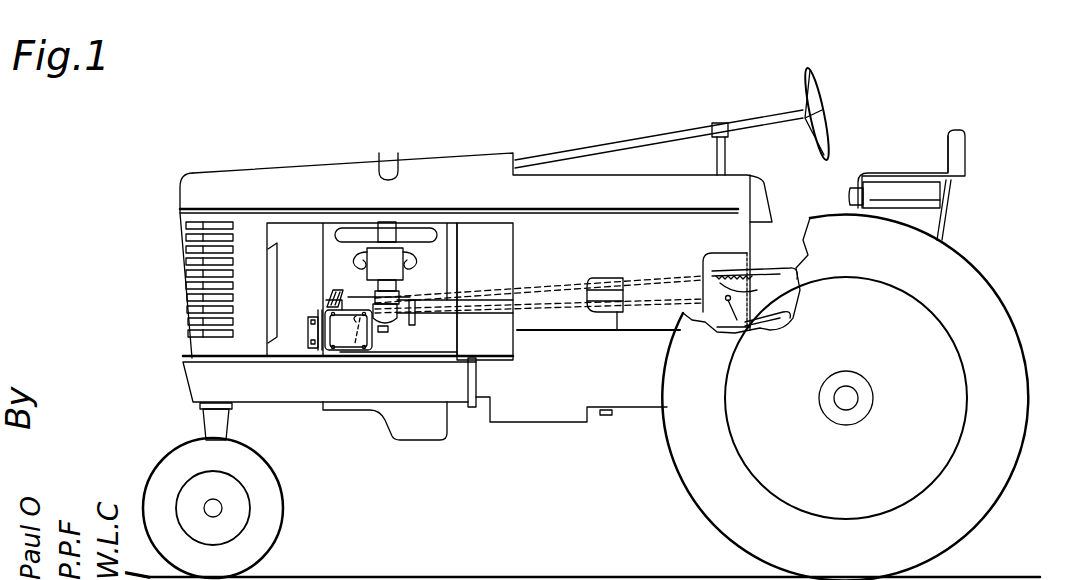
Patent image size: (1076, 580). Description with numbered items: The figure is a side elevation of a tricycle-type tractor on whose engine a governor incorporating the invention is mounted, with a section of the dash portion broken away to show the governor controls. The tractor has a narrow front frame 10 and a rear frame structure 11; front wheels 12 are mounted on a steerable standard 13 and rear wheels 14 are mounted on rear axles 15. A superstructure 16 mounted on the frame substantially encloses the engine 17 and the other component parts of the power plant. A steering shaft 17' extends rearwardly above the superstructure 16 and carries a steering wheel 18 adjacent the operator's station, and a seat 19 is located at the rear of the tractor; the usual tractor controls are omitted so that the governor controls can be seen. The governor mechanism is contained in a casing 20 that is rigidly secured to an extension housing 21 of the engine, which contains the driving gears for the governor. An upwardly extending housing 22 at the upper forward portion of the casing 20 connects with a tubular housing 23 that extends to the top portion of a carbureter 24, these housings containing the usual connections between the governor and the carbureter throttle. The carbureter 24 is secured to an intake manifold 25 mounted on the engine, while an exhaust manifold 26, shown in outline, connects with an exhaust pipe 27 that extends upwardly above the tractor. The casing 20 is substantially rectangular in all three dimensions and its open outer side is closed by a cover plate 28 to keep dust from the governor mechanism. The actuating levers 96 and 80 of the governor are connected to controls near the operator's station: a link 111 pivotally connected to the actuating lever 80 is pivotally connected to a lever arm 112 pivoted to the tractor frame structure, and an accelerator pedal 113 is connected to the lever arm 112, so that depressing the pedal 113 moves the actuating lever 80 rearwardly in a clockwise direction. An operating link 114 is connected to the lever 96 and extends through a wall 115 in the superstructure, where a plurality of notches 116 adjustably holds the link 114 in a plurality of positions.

The front frame 10 is at (438, 390).
The rear frame structure 11 is at (576, 413).
The front wheels 12 is at (278, 507).
The steerable standard 13 is at (220, 422).
The rear wheels 14 is at (1020, 418).
The rear axles 15 is at (861, 398).
The superstructure 16 is at (485, 163).
The engine 17 is at (362, 267).
The steering shaft 17' is at (659, 135).
The steering wheel 18 is at (820, 98).
The seat 19 is at (946, 215).
The casing 20 is at (368, 344).
The extension housing 21 is at (316, 345).
The upwardly extending housing 22 is at (325, 301).
The tubular housing 23 is at (367, 296).
The carbureter 24 is at (390, 322).
The intake manifold 25 is at (352, 252).
The exhaust manifold 26 is at (418, 230).
The exhaust pipe 27 is at (388, 168).
The cover plate 28 is at (348, 334).
The actuating lever 80 is at (328, 295).
The actuating lever 96 is at (398, 312).
The link 111 is at (617, 331).
The lever arm 112 is at (732, 315).
The accelerator pedal 113 is at (772, 325).
The operating link 114 is at (610, 283).
The wall 115 is at (750, 263).
The notches 116 is at (750, 288).